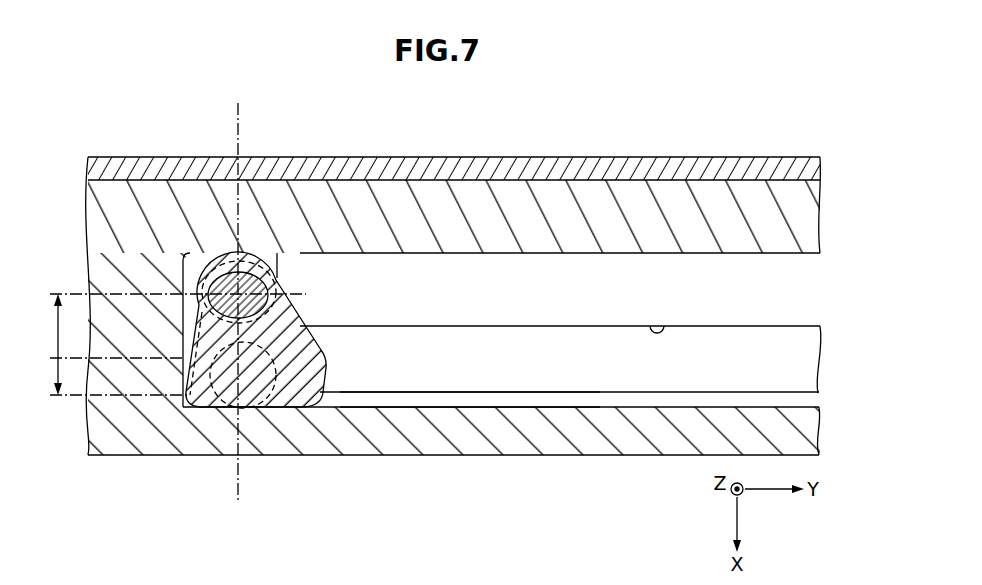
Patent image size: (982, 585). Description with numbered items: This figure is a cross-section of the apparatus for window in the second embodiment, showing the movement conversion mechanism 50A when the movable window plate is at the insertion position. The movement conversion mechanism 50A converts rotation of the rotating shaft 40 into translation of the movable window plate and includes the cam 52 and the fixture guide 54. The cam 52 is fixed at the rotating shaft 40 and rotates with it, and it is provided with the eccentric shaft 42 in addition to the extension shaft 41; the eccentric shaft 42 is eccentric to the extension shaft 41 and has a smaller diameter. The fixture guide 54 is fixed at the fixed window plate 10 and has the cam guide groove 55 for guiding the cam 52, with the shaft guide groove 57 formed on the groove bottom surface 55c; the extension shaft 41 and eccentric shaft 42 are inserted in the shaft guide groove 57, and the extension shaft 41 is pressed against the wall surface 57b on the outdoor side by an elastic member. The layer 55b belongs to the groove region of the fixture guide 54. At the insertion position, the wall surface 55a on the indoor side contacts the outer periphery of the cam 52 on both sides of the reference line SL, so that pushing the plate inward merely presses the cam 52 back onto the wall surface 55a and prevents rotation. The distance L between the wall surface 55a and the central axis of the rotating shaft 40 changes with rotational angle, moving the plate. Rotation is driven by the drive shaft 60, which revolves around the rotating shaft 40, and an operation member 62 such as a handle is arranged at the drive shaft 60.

The fixed window plate 10 is at (310, 168).
The fixture guide 54 is at (402, 197).
The cam guide groove 55 is at (431, 507).
The wall surface of the cam guide groove on the indoor side 55a is at (443, 407).
The second layer of lower substrate 55b is at (542, 254).
The groove bottom surface of the cam guide groove 55c is at (499, 398).
The shaft guide groove 57 is at (697, 315).
The wall surface of the shaft guide groove on the outdoor side 57b is at (650, 325).
The rotating shaft 40 is at (234, 273).
The extension shaft 41 is at (207, 262).
The eccentric shaft 42 is at (291, 395).
The cam 52 is at (322, 376).
The drive shaft 60 is at (184, 405).
The operation member 62 is at (182, 403).
The movement conversion mechanism 50A is at (648, 480).
The reference line SL is at (243, 130).
The distance L is at (173, 344).